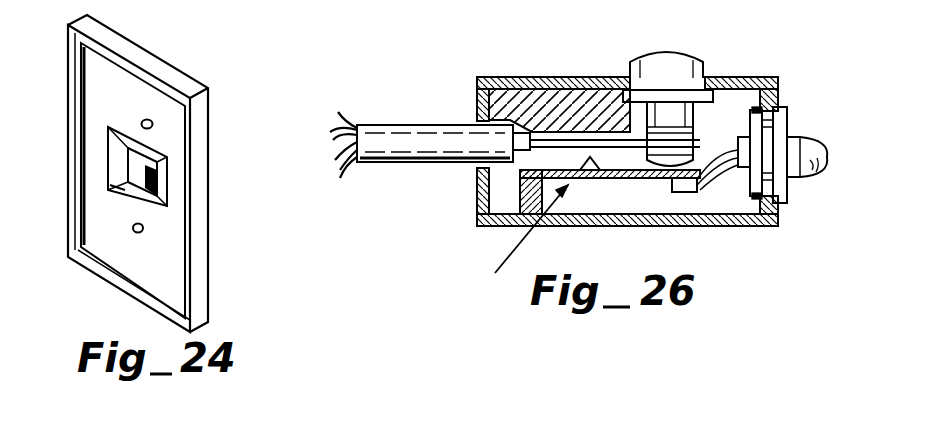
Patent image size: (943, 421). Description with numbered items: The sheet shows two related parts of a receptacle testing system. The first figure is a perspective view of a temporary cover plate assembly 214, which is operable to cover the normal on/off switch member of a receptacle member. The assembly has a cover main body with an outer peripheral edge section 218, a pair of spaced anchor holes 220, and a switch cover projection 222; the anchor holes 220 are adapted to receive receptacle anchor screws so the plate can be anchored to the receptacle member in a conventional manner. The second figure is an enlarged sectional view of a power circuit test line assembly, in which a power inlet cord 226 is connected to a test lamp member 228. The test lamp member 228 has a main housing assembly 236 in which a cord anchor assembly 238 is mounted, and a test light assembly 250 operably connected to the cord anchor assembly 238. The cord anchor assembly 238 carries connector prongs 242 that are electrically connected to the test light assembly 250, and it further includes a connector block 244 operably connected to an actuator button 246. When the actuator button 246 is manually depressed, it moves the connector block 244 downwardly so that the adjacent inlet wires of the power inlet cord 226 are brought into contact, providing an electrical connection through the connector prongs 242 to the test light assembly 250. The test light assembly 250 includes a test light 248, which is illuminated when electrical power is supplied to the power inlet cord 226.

In FIG. 24, the temporary cover plate assembly 214 is at (188, 72).
In FIG. 24, the outer peripheral edge section 218 is at (73, 88).
In FIG. 24, the anchor holes 220 is at (152, 129).
In FIG. 24, the switch cover projection 222 is at (125, 192).
In FIG. 26, the power inlet cord 226 is at (410, 133).
In FIG. 26, the test lamp member 228 is at (723, 78).
In FIG. 26, the main housing assembly 236 is at (507, 230).
In FIG. 26, the cord anchor assembly 238 is at (503, 238).
In FIG. 26, the connector prongs 242 is at (620, 180).
In FIG. 26, the connector block 244 is at (550, 103).
In FIG. 26, the actuator button 246 is at (690, 38).
In FIG. 26, the test light 248 is at (807, 150).
In FIG. 26, the test light assembly 250 is at (718, 182).